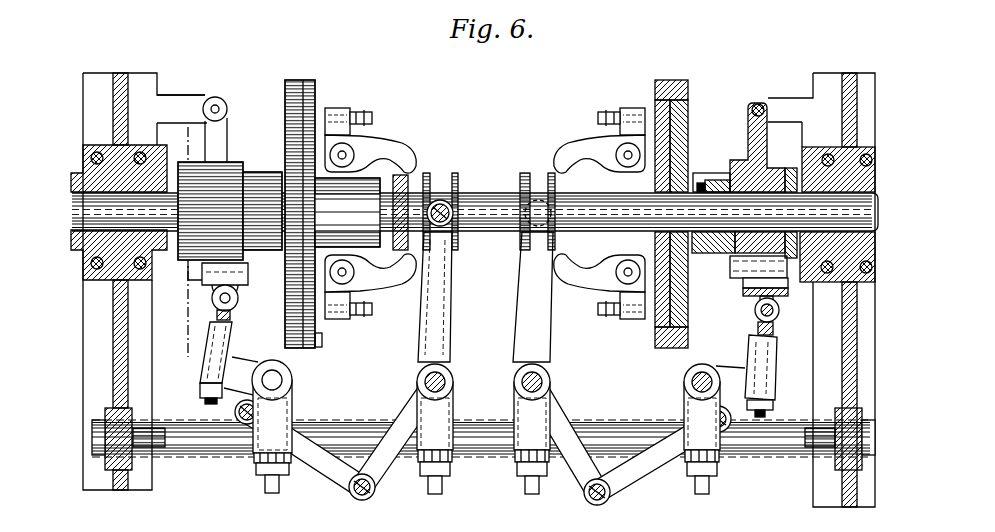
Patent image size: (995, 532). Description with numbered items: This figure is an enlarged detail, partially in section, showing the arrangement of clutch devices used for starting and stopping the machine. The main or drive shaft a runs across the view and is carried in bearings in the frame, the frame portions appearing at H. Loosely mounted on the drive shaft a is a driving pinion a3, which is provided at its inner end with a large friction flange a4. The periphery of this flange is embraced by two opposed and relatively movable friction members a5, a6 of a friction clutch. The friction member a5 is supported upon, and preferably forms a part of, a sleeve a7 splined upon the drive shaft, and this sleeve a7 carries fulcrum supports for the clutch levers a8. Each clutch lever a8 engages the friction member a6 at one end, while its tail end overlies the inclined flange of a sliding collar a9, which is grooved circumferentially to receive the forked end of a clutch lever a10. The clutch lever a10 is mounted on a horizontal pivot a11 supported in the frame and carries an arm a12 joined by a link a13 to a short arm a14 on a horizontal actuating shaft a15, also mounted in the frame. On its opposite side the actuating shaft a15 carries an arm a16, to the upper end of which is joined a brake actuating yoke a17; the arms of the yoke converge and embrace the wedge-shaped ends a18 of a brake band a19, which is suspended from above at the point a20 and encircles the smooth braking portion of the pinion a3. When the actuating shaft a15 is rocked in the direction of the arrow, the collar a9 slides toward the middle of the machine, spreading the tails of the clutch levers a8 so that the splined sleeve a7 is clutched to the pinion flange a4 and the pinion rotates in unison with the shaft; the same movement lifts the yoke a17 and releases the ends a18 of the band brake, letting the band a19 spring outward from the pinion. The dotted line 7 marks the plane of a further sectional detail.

The drive shaft a is at (480, 203).
The driving pinion a3 is at (262, 172).
The friction flange a4 is at (688, 142).
The friction member a5 is at (687, 110).
The friction member a6 is at (637, 340).
The sleeve a7 is at (600, 180).
The clutch lever a8 is at (397, 152).
The sliding collar a9 is at (460, 250).
The clutch lever a10 is at (450, 340).
The horizontal pivot a11 is at (548, 380).
The arm a12 is at (563, 413).
The link a13 is at (648, 475).
The short arm a14 is at (672, 373).
The horizontal actuating shaft a15 is at (698, 382).
The arm a16 is at (777, 381).
The brake actuating yoke a17 is at (752, 304).
The wedge-shaped ends a18 is at (730, 264).
The brake band a19 is at (788, 162).
The suspension point a20 is at (758, 107).
The frame H is at (473, 290).
The section line 7— 7 is at (179, 245).